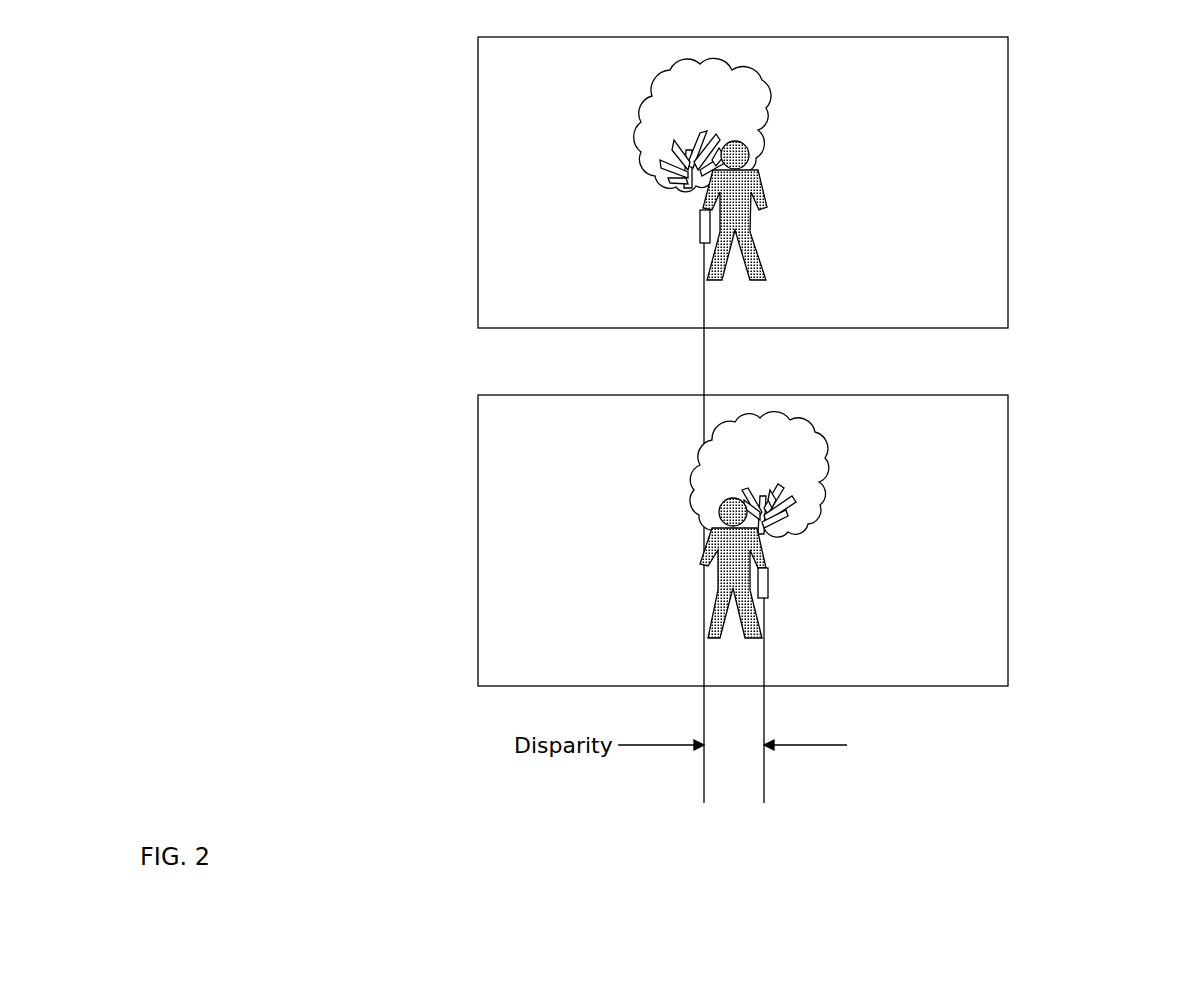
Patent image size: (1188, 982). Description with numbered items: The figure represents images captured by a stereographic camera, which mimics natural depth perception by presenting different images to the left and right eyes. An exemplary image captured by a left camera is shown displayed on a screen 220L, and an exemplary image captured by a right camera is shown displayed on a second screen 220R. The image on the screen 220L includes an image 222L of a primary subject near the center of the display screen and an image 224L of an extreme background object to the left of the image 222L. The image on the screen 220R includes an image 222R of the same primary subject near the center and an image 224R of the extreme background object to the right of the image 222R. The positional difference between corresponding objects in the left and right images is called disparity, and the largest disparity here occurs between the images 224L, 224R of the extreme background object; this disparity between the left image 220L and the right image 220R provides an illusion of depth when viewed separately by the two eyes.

The screen 220L is at (1008, 155).
The second screen 220R is at (1008, 502).
The image of a primary subject 222L is at (766, 193).
The image of the primary subject 222R is at (703, 553).
The image of an extreme background object 224L is at (638, 130).
The image of the extreme background object 224R is at (820, 475).